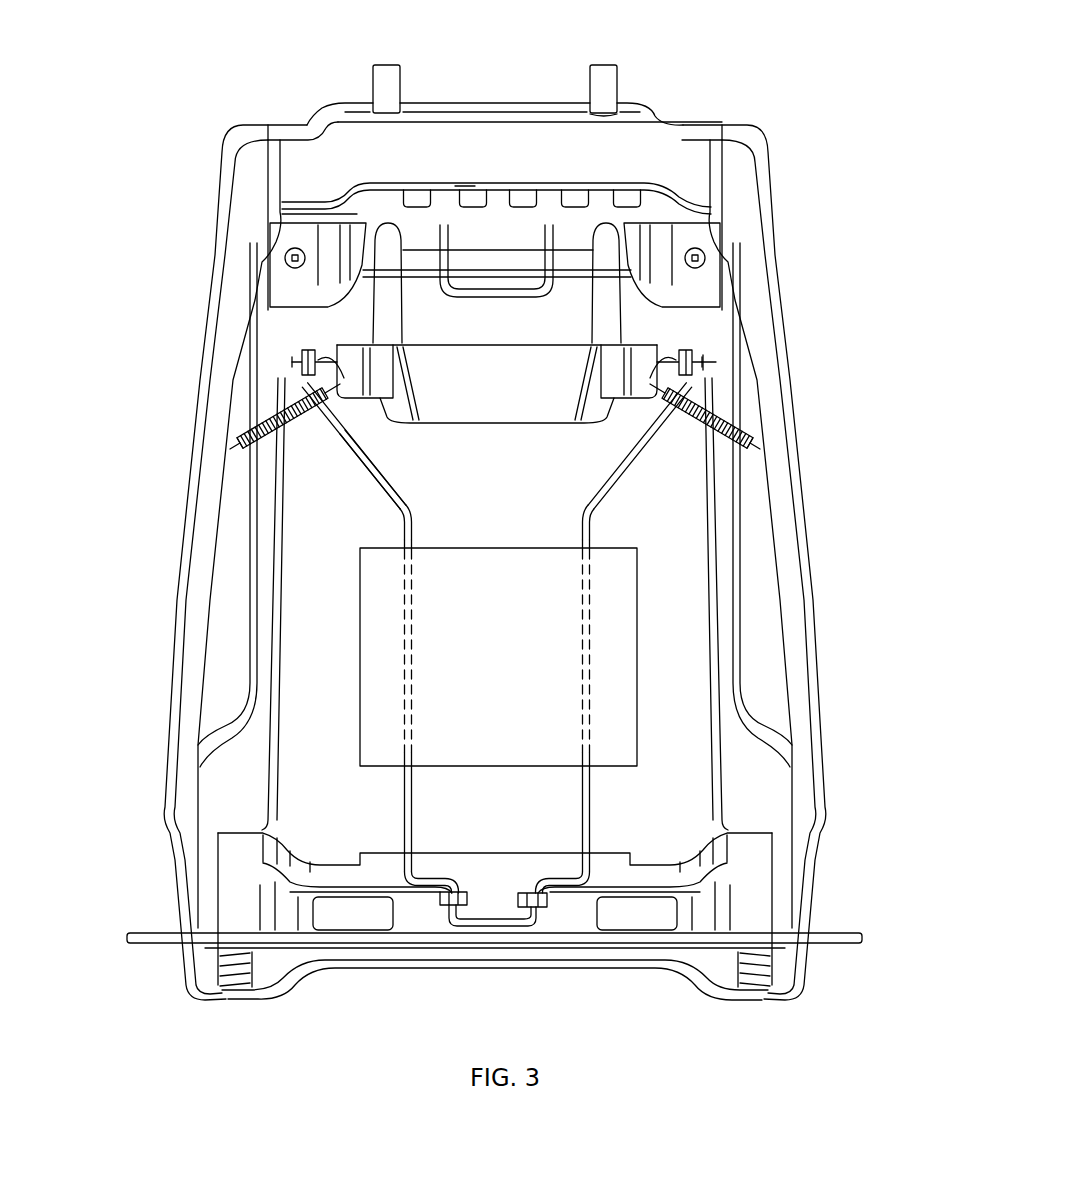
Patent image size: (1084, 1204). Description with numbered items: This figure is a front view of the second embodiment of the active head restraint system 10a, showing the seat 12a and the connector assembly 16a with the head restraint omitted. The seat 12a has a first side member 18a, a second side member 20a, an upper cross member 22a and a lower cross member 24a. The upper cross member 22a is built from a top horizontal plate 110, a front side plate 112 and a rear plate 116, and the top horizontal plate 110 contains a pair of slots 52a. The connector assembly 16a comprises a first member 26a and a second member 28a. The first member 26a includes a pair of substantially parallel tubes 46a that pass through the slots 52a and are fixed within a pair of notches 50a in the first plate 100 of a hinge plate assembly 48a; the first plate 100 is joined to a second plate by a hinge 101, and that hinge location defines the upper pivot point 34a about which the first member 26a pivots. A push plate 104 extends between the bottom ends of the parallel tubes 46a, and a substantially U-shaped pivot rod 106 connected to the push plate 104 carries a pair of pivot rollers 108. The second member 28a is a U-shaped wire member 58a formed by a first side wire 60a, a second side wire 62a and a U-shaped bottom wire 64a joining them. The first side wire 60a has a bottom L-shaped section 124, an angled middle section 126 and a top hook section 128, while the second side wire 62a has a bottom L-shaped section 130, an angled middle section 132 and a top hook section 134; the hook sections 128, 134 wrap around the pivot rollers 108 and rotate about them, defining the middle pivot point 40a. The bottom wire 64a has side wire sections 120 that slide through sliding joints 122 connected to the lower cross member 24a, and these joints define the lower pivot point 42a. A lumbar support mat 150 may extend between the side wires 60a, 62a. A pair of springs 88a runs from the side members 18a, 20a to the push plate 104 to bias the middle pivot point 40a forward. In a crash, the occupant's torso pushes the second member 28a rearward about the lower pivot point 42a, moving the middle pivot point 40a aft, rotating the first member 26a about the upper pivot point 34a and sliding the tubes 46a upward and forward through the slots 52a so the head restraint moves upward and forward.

The active head restraint system 10a is at (472, 525).
The seat 12a is at (496, 515).
The connector assembly 16a is at (496, 638).
The first side member 18a is at (210, 429).
The second side member 20a is at (773, 444).
The upper cross member 22a is at (660, 138).
The lower cross member 24a is at (557, 912).
The first member 26a is at (493, 490).
The second member 28a is at (504, 705).
The upper pivot point 34a is at (386, 197).
The middle pivot point 40a is at (708, 363).
The lower pivot point 42a is at (432, 904).
The parallel tubes 46a is at (393, 303).
The hinge plate assembly 48a is at (480, 262).
The notches 50a is at (416, 206).
The slots 52a is at (362, 103).
The U-shaped wire member 58a is at (378, 483).
The first side wire 60a is at (400, 529).
The second side wire 62a is at (529, 528).
The bottom wire 64a is at (537, 929).
The springs 88a is at (307, 420).
The first plate 100 is at (493, 222).
The hinge 101 is at (462, 186).
The push plate 104 is at (522, 408).
The U-shaped pivot rod 106 is at (661, 358).
The pivot rollers 108 is at (299, 358).
The top horizontal plate 110 is at (564, 112).
The front side plate 112 is at (546, 128).
The rear plate 116 is at (283, 290).
The side wire sections 120 is at (579, 926).
The sliding joints 122 is at (447, 908).
The bottom L-shaped section 124 is at (406, 802).
The angled middle section 126 is at (366, 465).
The top hook section 128 is at (305, 352).
The bottom L-shaped section 130 is at (587, 806).
The angled middle section 132 is at (630, 424).
The top hook section 134 is at (693, 313).
The lumbar support mat 150 is at (622, 681).